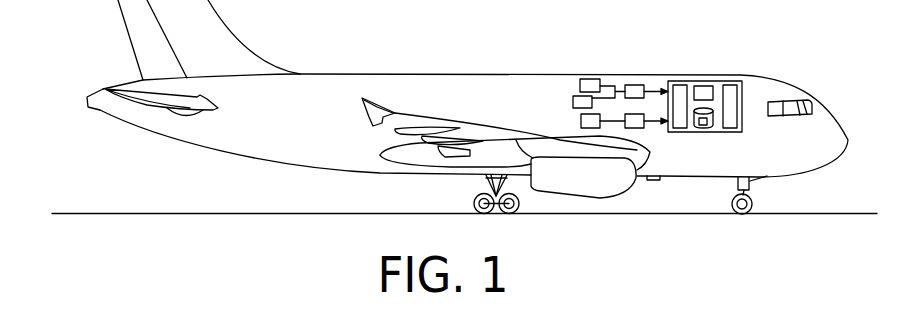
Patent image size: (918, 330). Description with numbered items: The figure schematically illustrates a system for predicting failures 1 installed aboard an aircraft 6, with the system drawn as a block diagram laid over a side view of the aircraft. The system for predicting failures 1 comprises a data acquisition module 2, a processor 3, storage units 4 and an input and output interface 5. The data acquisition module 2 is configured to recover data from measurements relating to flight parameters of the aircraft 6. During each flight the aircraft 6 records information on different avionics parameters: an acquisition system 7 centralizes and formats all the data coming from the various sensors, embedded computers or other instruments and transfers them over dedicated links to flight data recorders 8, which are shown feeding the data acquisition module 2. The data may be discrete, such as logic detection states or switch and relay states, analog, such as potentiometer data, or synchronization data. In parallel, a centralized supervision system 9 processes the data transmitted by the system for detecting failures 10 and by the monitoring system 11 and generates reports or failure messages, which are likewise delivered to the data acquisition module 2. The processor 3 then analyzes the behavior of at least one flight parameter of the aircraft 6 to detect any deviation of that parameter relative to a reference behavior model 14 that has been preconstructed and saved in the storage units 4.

The system for predicting failures 1 is at (733, 136).
The data acquisition module 2 is at (683, 87).
The processor 3 is at (705, 86).
The storage units 4 is at (694, 128).
The input and output interface 5 is at (735, 86).
The aircraft 6 is at (658, 177).
The acquisition system 7 is at (590, 128).
The flight data recorders 8 is at (633, 128).
The centralized supervision system 9 is at (637, 84).
The system for detecting failures 10 is at (588, 79).
The monitoring system 11 is at (573, 99).
The reference behavior model 14 is at (706, 128).